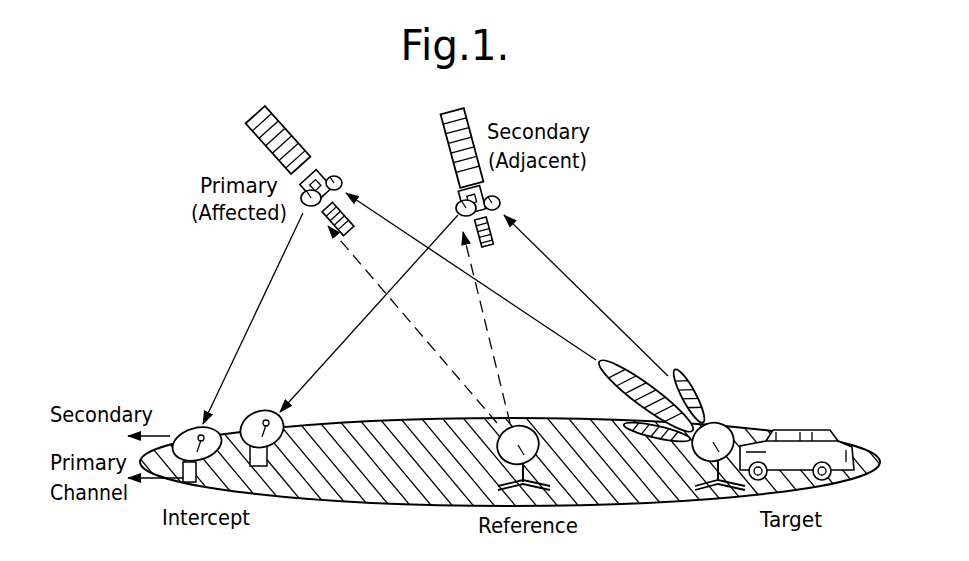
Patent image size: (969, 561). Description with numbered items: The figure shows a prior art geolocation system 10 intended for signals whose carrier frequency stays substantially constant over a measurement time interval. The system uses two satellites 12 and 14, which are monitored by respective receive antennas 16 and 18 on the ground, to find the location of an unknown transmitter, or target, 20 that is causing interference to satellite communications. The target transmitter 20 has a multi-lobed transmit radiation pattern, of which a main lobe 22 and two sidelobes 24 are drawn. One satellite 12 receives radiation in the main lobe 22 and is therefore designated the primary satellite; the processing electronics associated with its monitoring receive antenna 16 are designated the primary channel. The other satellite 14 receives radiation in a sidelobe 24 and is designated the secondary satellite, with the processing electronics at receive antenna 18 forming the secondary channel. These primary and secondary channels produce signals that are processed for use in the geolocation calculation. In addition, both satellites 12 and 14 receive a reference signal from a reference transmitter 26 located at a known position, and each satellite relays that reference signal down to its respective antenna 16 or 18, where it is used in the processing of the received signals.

The geolocation system 10 is at (670, 303).
The primary satellite 12 is at (323, 171).
The secondary satellite 14 is at (493, 193).
The receive antenna 16 is at (188, 426).
The receive antenna 18 is at (284, 420).
The unknown transmitter (target) 20 is at (722, 430).
The main lobe 22 is at (603, 369).
The sidelobes 24 is at (695, 390).
The reference transmitter 26 is at (526, 437).